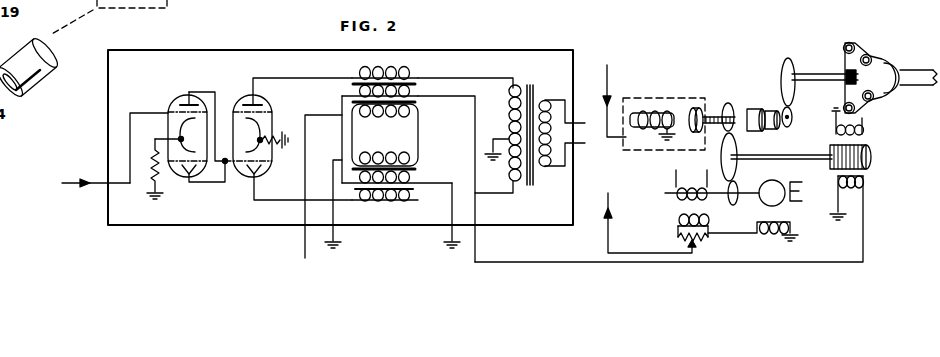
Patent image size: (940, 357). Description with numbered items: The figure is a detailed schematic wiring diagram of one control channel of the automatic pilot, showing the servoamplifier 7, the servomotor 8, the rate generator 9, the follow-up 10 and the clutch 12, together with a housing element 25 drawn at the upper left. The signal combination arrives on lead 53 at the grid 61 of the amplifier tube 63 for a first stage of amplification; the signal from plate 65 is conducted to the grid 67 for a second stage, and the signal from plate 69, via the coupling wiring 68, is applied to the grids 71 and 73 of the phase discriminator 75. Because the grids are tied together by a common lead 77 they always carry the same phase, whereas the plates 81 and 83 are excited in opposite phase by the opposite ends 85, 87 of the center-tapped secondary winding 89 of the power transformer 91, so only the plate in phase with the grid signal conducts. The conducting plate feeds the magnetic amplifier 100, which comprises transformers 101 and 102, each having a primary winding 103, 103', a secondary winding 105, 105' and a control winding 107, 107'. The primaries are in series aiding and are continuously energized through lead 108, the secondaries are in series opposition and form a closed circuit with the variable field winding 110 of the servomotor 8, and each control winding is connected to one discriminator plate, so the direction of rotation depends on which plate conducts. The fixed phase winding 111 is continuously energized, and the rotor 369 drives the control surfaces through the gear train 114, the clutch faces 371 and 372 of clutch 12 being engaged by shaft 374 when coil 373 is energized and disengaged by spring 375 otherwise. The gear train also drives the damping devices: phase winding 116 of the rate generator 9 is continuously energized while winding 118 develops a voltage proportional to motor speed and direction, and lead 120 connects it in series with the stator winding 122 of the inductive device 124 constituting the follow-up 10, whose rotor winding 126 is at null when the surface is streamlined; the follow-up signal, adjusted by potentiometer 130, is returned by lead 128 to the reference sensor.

The servoamplifier 7 is at (108, 90).
The lamp housing 25 is at (46, 50).
The lead 53 is at (80, 180).
The grid 61 is at (172, 103).
The amplifier tube 63 is at (168, 127).
The plate 65 is at (187, 101).
The grid 67 is at (183, 173).
The coupling lead 68 is at (215, 92).
The plate 69 is at (190, 183).
The grid 71 is at (273, 113).
The grid 73 is at (267, 172).
The phase discriminator 75 is at (265, 101).
The common lead 77 is at (222, 118).
The plate 81 is at (251, 101).
The plate 83 is at (248, 178).
The end of secondary winding 85 is at (517, 84).
The end of secondary winding 87 is at (516, 186).
The center-tapped secondary winding 89 is at (502, 130).
The power transformer 91 is at (551, 85).
The magnetic amplifier 100 is at (415, 136).
The transformer 101 is at (449, 119).
The transformer 102 is at (451, 165).
The primary winding 103 is at (383, 127).
The primary winding 103' is at (383, 144).
The secondary winding 105 is at (408, 170).
The secondary winding 105' is at (401, 209).
The control winding 107 is at (432, 74).
The control winding 107' is at (398, 204).
The lead 108 is at (305, 246).
The clutch 12 is at (677, 97).
The coil 373 is at (645, 112).
The spring 375 is at (713, 102).
The shaft 374 is at (733, 106).
The clutch face 371 is at (752, 108).
The clutch face 372 is at (786, 128).
The servomotor 8 is at (889, 154).
The gear train 114 is at (781, 147).
The rotor 369 is at (871, 160).
The fixed phase winding 111 is at (866, 125).
The variable field winding 110 is at (862, 184).
The rotor winding 126 is at (676, 190).
The rate generator 9 is at (777, 181).
The phase winding 116 is at (799, 202).
The winding 118 is at (776, 236).
The inductive device 124 is at (671, 219).
The stator winding 122 is at (675, 231).
The lead 128 is at (650, 223).
The follow-up 10 is at (700, 208).
The potentiometer 130 is at (708, 235).
The lead 120 is at (746, 238).